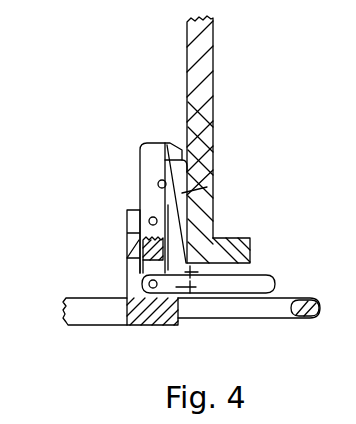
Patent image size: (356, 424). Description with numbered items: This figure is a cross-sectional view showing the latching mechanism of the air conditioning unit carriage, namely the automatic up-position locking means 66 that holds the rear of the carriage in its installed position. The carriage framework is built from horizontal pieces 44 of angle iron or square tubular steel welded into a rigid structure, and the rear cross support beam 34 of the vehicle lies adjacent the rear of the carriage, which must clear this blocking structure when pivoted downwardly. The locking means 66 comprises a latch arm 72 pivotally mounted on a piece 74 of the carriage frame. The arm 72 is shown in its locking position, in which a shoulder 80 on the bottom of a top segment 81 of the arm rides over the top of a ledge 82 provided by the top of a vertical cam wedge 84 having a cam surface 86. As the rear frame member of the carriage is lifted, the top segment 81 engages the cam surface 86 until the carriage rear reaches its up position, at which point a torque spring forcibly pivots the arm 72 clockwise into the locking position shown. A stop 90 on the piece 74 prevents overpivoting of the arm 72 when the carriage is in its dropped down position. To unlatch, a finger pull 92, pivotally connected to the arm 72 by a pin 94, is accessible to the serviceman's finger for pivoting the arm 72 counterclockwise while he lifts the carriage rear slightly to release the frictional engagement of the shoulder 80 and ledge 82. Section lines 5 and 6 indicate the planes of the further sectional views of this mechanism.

The rear cross support beam 34 is at (221, 265).
The horizontal pieces 44 is at (83, 312).
The up-position locking means 66 is at (118, 168).
The latch arm 72 is at (138, 150).
The piece 74 is at (130, 210).
The shoulder 80 is at (205, 152).
The top segment 81 is at (213, 113).
The ledge 82 is at (166, 143).
The vertical cam wedge 84 is at (182, 193).
The cam surface 86 is at (190, 178).
The stop 90 is at (128, 256).
The finger pull 92 is at (250, 282).
The pin 94 is at (127, 298).
The section line 5- 5 is at (50, 285).
The section line 6- 6 is at (82, 225).